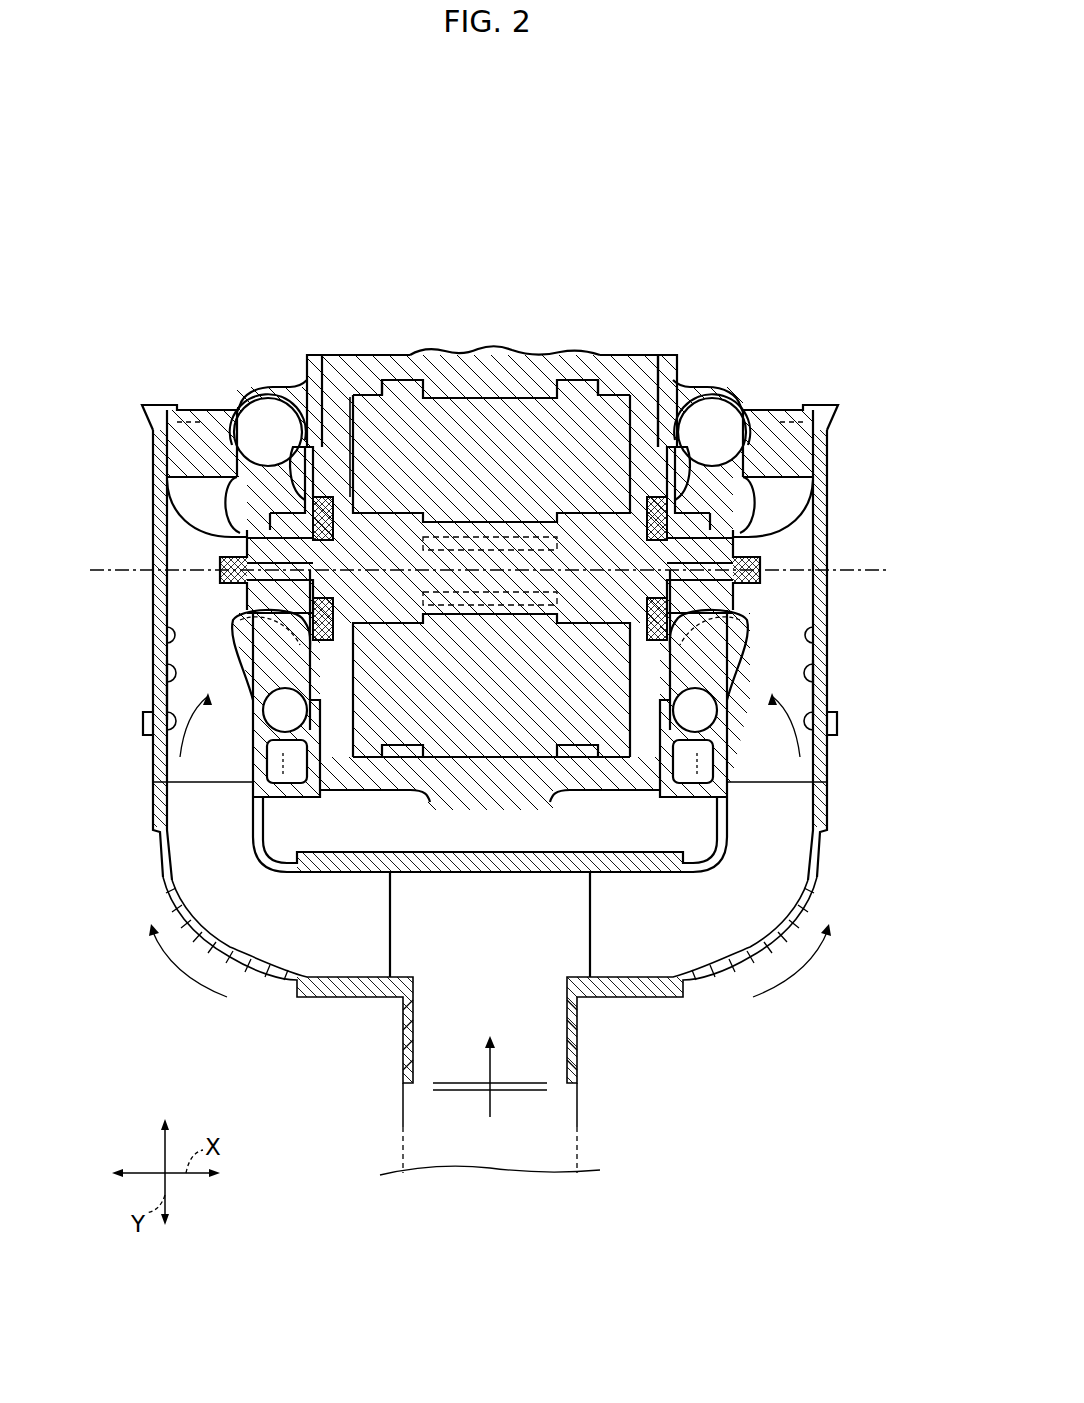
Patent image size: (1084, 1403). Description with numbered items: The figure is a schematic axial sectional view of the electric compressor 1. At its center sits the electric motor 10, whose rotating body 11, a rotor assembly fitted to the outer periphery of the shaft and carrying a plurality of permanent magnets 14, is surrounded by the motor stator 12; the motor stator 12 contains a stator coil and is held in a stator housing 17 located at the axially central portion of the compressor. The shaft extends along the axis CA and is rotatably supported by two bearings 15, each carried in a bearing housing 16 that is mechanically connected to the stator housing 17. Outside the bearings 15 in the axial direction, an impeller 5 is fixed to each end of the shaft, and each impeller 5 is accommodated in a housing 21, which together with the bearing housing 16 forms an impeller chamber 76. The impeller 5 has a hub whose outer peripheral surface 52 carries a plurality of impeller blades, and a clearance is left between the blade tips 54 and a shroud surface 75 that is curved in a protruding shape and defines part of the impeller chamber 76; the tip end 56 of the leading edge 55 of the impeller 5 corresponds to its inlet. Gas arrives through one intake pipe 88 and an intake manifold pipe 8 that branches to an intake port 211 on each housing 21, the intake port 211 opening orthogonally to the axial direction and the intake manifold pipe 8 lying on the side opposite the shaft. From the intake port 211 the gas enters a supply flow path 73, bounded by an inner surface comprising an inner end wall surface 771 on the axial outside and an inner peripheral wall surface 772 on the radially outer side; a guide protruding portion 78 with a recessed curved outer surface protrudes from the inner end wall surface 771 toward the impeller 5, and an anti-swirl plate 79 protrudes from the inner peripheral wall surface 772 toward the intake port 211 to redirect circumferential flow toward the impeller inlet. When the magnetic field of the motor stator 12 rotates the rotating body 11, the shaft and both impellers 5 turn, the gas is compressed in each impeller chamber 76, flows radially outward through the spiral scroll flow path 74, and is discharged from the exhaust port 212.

The electric compressor 1 is at (754, 218).
The impeller 5 is at (813, 465).
The intake manifold pipe 8 is at (716, 986).
The electric motor 10 is at (573, 389).
The rotating body 11 is at (622, 490).
The motor stator 12 is at (406, 398).
The permanent magnets 14 is at (500, 512).
The bearing 15 is at (648, 492).
The bearing housing 16 is at (632, 395).
The stator housing 17 is at (457, 345).
The housing 21 is at (700, 385).
The outer peripheral surface 52 is at (762, 600).
The tip 54 is at (745, 627).
The leading edge 55 is at (763, 560).
The tip end 56 is at (767, 537).
The supply flow path 73 is at (800, 760).
The scroll flow path 74 is at (722, 408).
The shroud surface 75 is at (740, 670).
The impeller chamber 76 is at (695, 509).
The guide protruding portion 78 is at (830, 648).
The anti-swirl plate 79 is at (793, 482).
The intake pipe 88 is at (583, 1113).
The intake port 211 is at (827, 737).
The exhaust port 212 is at (743, 788).
The inner end wall surface 771 is at (827, 683).
The inner peripheral wall surface 772 is at (810, 405).
The axis CA is at (113, 569).